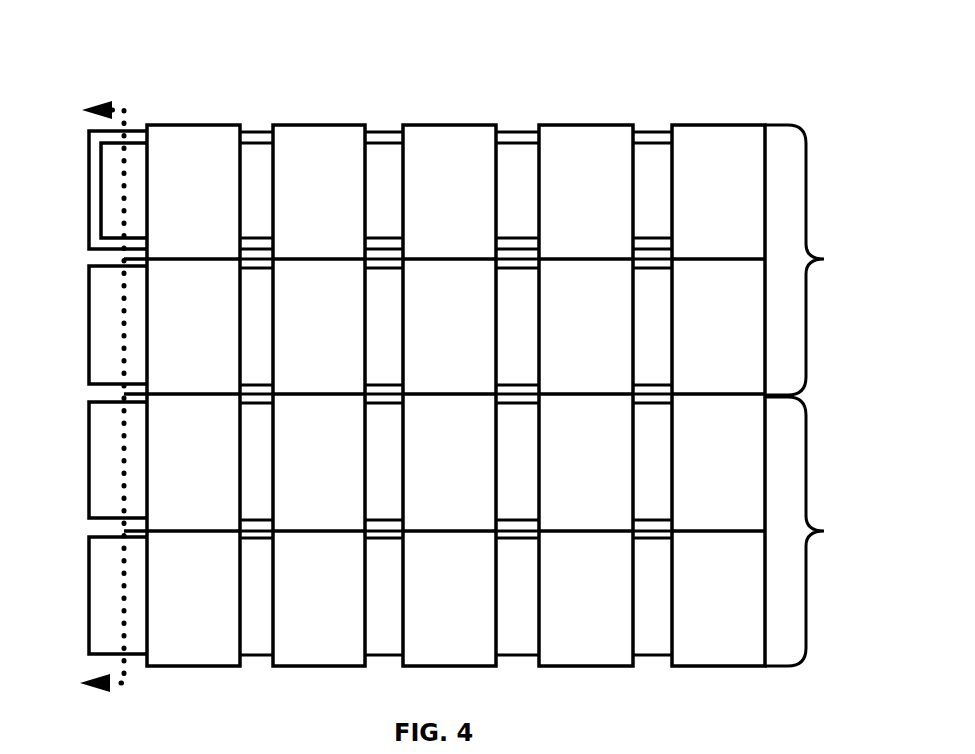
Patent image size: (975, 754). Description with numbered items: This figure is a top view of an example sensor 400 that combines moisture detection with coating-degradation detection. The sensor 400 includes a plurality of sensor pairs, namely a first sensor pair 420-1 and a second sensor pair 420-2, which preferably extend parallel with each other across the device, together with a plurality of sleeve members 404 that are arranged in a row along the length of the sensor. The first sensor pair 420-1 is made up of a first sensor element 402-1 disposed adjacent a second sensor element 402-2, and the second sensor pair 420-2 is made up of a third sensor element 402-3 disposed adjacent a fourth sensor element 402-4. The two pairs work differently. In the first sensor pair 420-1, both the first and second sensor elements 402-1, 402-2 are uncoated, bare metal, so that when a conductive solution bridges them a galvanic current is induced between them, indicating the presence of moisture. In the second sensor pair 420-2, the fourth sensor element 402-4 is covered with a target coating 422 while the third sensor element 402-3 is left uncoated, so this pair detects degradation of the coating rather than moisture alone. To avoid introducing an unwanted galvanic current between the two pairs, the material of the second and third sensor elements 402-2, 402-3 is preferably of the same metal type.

The sensor 400 is at (112, 58).
The first sensor element 402-1 is at (89, 596).
The second sensor element 402-2 is at (89, 460).
The third sensor element 402-3 is at (89, 328).
The fourth sensor element 402-4 is at (89, 183).
The sleeve members 404 is at (338, 123).
The first sensor pair 420-1 is at (836, 531).
The second sensor pair 420-2 is at (836, 260).
The target coating 422 is at (648, 133).